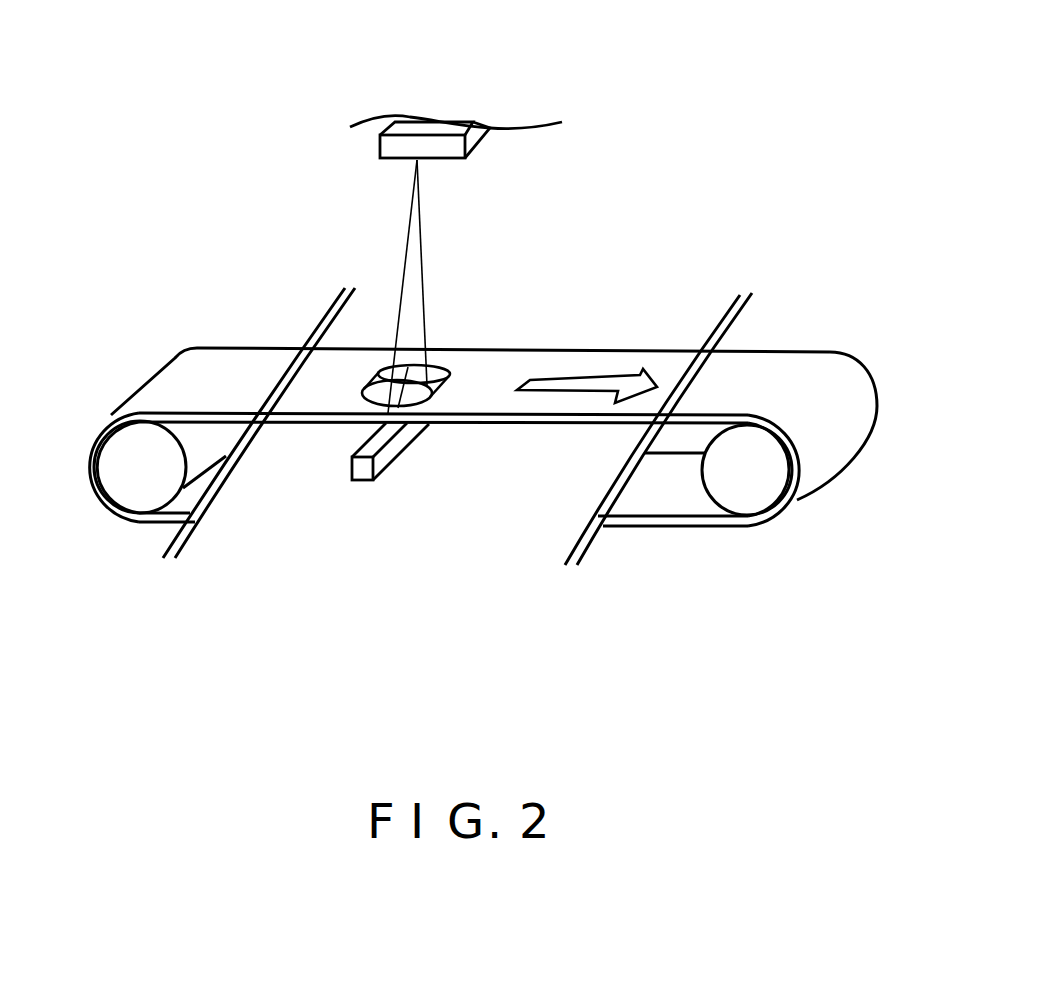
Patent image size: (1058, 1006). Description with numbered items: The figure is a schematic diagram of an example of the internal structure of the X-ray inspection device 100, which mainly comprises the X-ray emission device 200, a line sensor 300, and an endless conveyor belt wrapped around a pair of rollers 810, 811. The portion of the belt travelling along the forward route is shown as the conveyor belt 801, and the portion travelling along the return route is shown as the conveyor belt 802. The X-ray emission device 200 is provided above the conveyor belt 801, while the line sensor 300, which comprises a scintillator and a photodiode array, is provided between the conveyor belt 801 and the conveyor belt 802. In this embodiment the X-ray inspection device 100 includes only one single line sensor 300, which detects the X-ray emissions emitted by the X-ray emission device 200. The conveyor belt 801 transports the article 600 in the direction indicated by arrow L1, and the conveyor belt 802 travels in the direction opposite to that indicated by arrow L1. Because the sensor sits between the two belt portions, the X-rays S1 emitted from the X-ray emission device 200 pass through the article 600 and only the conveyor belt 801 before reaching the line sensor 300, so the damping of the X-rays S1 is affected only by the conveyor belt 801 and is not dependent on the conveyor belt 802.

The X-ray inspection device 100 is at (705, 72).
The X-ray emission device 200 is at (442, 133).
The X-rays S1 is at (415, 255).
The article 600 is at (456, 373).
The arrow indicating transport direction L1 is at (607, 386).
The line sensor 300 is at (387, 453).
The conveyor belt (forward route) 801 is at (250, 366).
The conveyor belt (return route) 802 is at (652, 490).
The roller 810 is at (124, 466).
The roller 811 is at (768, 470).